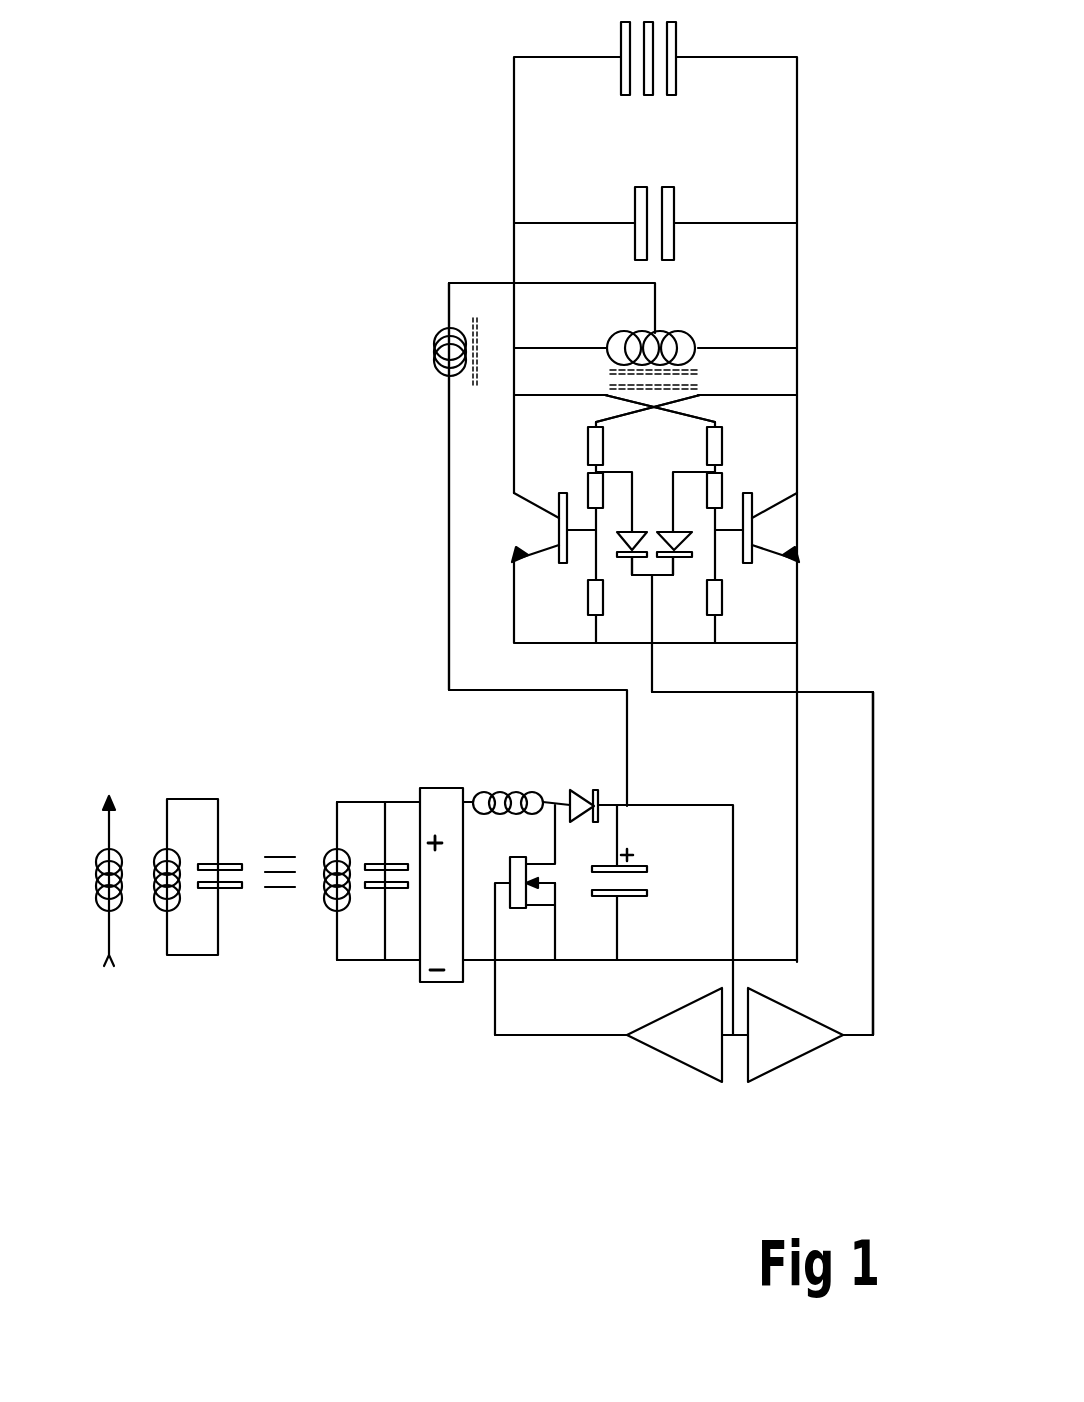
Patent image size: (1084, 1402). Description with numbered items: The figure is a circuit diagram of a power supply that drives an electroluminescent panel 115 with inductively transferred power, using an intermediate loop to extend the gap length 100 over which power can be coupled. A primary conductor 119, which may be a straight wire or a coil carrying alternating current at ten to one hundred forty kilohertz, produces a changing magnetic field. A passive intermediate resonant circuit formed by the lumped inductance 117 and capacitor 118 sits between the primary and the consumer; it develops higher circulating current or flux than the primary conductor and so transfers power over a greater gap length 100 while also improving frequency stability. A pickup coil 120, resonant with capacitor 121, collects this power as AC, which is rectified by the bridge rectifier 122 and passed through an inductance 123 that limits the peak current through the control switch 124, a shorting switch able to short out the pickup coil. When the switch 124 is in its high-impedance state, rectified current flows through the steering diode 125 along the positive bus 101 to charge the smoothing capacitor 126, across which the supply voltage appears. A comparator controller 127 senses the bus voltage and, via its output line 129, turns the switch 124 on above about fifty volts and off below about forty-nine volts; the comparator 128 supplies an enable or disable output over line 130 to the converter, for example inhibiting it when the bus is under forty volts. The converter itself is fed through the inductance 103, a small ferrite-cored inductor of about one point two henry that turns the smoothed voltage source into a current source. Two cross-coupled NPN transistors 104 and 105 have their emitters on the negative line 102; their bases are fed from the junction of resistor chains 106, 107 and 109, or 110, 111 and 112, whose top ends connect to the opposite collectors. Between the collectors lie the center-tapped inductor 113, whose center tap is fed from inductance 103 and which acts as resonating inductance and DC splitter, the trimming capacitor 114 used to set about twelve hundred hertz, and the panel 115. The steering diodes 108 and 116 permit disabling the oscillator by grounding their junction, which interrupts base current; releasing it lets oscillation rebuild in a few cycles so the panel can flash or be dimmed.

The gap length 100 is at (282, 855).
The positive power input 101 is at (449, 548).
The negative power input 102 is at (850, 648).
The inductance 103 is at (443, 385).
The NPN transistor 104 is at (559, 530).
The NPN transistor 105 is at (753, 528).
The resistor 106 is at (588, 603).
The resistor 107 is at (588, 447).
The steering diode 108 is at (632, 532).
The resistor 109 is at (607, 415).
The resistor 110 is at (782, 625).
The resistor 111 is at (722, 445).
The resistor 112 is at (718, 428).
The center-tapped inductor 113 is at (757, 312).
The capacitor 114 is at (676, 186).
The electroluminescent panel 115 is at (678, 30).
The steering diode 116 is at (684, 560).
The lumped inductance 117 is at (167, 848).
The capacitor 118 is at (242, 890).
The primary conductor 119 is at (109, 842).
The pickup coil 120 is at (337, 848).
The capacitor 121 is at (405, 890).
The bridge rectifier 122 is at (428, 984).
The inductance 123 is at (525, 791).
The control switch 124 is at (526, 910).
The steering diode 125 is at (597, 790).
The smoothing capacitor 126 is at (647, 880).
The controller 127 is at (693, 1068).
The controller 128 is at (825, 1055).
The line 129 is at (580, 1035).
The output line 130 is at (873, 875).